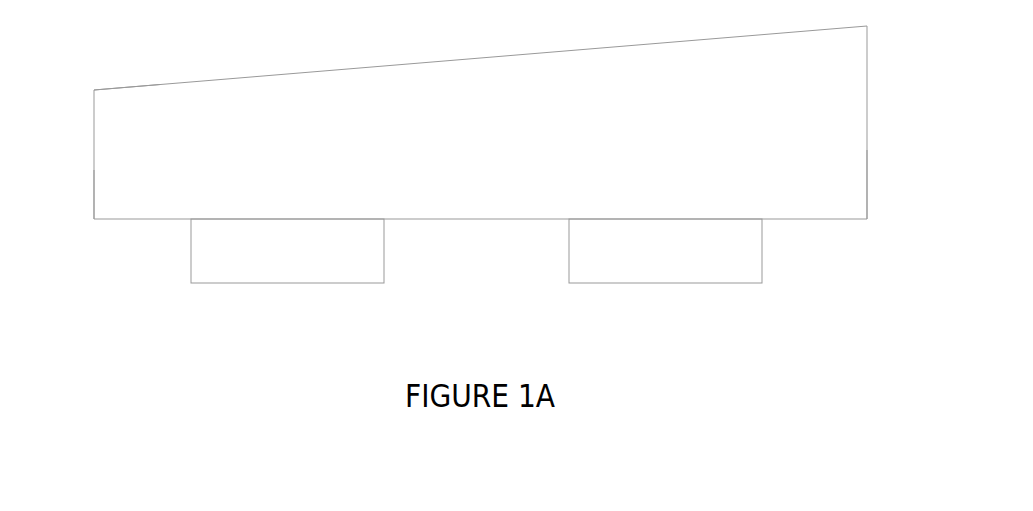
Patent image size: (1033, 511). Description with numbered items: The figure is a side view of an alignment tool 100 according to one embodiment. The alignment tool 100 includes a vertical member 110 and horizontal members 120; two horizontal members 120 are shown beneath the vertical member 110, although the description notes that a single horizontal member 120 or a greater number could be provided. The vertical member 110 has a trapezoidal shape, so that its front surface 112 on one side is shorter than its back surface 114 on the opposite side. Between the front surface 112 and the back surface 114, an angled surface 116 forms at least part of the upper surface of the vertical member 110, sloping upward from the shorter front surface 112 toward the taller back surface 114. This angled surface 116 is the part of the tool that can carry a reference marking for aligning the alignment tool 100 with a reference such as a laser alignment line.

The alignment tool 100 is at (487, 183).
The vertical member 110 is at (480, 122).
The front surface 112 is at (93, 174).
The back surface 114 is at (868, 156).
The angled surface 116 is at (133, 87).
The horizontal members 120 is at (476, 251).